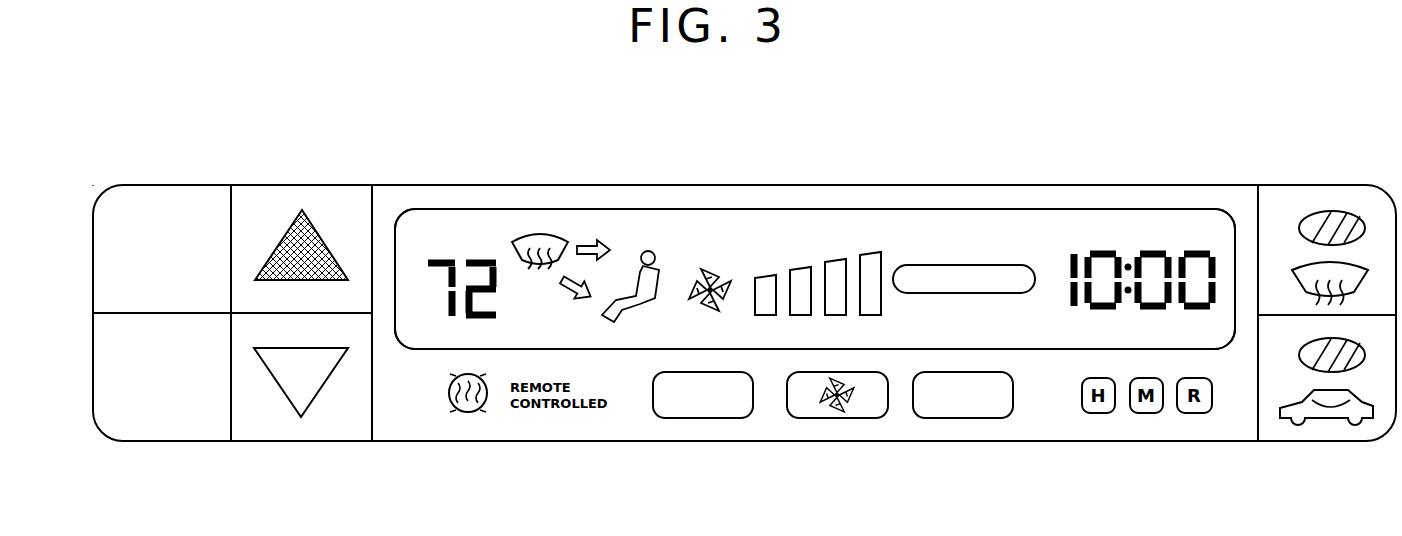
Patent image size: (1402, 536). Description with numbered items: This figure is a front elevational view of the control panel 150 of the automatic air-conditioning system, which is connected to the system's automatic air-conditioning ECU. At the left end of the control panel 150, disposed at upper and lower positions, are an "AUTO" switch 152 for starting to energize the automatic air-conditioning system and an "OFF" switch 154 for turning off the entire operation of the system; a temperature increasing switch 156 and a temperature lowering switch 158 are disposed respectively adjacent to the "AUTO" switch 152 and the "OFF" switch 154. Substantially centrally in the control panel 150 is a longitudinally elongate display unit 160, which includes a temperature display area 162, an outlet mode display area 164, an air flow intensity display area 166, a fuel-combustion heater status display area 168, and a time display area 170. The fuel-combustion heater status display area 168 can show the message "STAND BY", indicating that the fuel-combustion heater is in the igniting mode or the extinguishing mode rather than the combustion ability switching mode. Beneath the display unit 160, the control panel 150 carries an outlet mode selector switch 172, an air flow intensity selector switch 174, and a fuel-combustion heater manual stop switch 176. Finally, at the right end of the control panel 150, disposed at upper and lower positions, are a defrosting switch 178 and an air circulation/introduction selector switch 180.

The control panel 150 is at (630, 135).
The "AUTO" switch 152 is at (137, 220).
The "OFF" switch 154 is at (172, 427).
The temperature increasing switch 156 is at (280, 218).
The temperature lowering switch 158 is at (337, 415).
The display unit 160 is at (865, 213).
The temperature display area 162 is at (472, 220).
The outlet mode display area 164 is at (577, 227).
The air flow intensity display area 166 is at (773, 253).
The fuel-combustion heater status display area 168 is at (1022, 250).
The time display area 170 is at (1143, 220).
The outlet mode selector switch 172 is at (685, 418).
The air flow intensity selector switch 174 is at (860, 418).
The fuel-combustion heater manual stop switch 176 is at (992, 418).
The defrosting switch 178 is at (1287, 203).
The air circulation/introduction selector switch 180 is at (1285, 423).